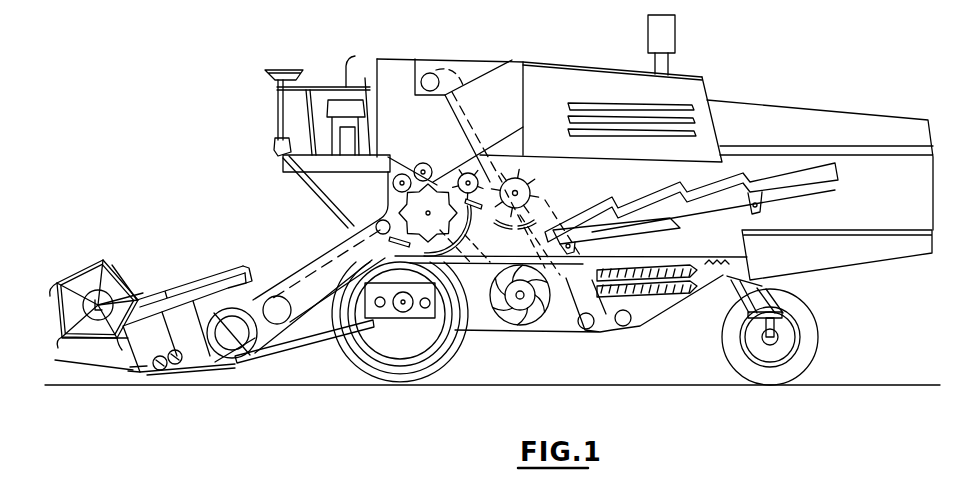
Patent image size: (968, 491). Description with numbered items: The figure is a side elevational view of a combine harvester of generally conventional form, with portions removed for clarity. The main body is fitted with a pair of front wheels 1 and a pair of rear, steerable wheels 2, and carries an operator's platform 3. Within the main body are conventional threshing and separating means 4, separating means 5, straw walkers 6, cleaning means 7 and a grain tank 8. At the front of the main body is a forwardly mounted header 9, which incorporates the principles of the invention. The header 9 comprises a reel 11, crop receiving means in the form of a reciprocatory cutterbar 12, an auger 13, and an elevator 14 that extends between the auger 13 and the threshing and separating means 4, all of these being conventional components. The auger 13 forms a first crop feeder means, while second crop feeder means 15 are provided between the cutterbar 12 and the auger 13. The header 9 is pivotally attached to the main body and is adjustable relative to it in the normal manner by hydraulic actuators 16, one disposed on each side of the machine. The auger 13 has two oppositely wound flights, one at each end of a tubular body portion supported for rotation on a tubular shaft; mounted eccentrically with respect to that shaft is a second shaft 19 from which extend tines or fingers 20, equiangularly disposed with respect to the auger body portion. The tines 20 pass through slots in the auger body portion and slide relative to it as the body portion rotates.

The front wheels 1 is at (437, 357).
The rear, steerable wheels 2 is at (810, 340).
The operator's platform 3 is at (292, 165).
The threshing and separating means 4 is at (392, 202).
The separating means 5 is at (550, 189).
The straw walkers 6 is at (813, 185).
The cleaning means 7 is at (571, 328).
The grain tank 8 is at (388, 74).
The header 9 is at (177, 276).
The reel 11 is at (75, 278).
The reciprocatory cutterbar 12 is at (134, 380).
The auger 13 is at (252, 300).
The elevator 14 is at (322, 258).
The second crop feeder means 15 is at (163, 349).
The hydraulic actuators 16 is at (322, 336).
The second shaft 19 is at (236, 352).
The tines or fingers 20 is at (240, 352).